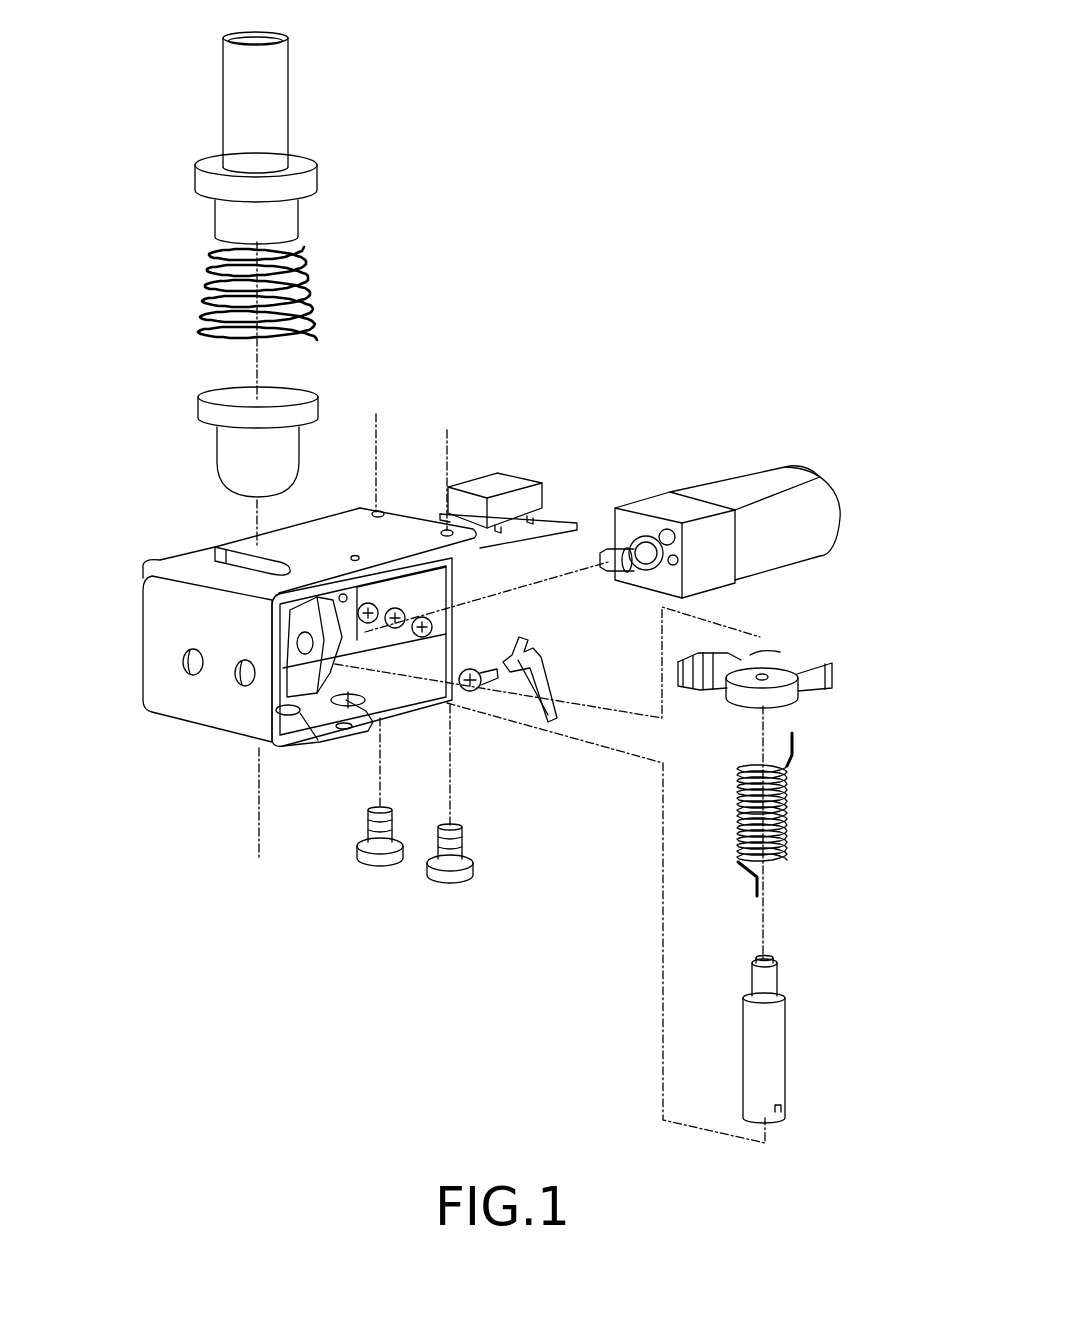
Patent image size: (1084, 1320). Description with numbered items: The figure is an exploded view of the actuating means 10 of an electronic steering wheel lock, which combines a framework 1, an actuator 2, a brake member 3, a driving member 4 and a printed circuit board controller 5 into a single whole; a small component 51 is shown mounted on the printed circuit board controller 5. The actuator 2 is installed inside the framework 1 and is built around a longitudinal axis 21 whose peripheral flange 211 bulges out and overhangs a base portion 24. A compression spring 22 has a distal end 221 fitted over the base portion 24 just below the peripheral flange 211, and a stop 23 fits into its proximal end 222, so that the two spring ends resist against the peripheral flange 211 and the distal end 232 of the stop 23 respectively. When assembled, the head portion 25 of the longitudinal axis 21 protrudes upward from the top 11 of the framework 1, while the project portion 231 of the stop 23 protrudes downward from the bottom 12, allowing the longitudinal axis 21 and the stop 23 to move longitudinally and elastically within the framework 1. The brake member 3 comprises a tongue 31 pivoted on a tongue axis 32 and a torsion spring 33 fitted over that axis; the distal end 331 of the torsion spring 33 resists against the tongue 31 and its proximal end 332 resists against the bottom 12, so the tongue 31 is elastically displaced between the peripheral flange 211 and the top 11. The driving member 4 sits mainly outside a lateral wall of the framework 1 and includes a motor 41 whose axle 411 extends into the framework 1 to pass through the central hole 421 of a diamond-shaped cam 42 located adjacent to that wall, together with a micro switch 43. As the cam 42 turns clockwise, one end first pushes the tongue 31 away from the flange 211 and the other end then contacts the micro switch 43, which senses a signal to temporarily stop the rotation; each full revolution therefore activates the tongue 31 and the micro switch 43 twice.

The actuating means 10 is at (487, 137).
The framework 1 is at (157, 637).
The top 11 is at (292, 542).
The bottom 12 is at (418, 724).
The actuator 2 is at (403, 68).
The longitudinal axis 21 is at (302, 76).
The peripheral flange 211 is at (290, 186).
The compression spring 22 is at (302, 283).
The distal end 221 is at (216, 246).
The proximal end 222 is at (198, 340).
The stop 23 is at (205, 441).
The project portion 231 is at (285, 463).
The distal end 232 is at (205, 413).
The base portion 24 is at (229, 220).
The head portion 25 is at (236, 84).
The brake member 3 is at (884, 658).
The tongue 31 is at (830, 676).
The tongue axis 32 is at (776, 1047).
The torsion spring 33 is at (790, 820).
The distal end 331 is at (795, 737).
The proximal end 332 is at (753, 890).
The driving member 4 is at (678, 428).
The motor 41 is at (676, 500).
The axle 411 is at (622, 580).
The cam 42 is at (522, 650).
The central hole 421 is at (303, 655).
The micro switch 43 is at (545, 655).
The printed circuit board controller 5 is at (548, 523).
The sensor 51 is at (491, 484).